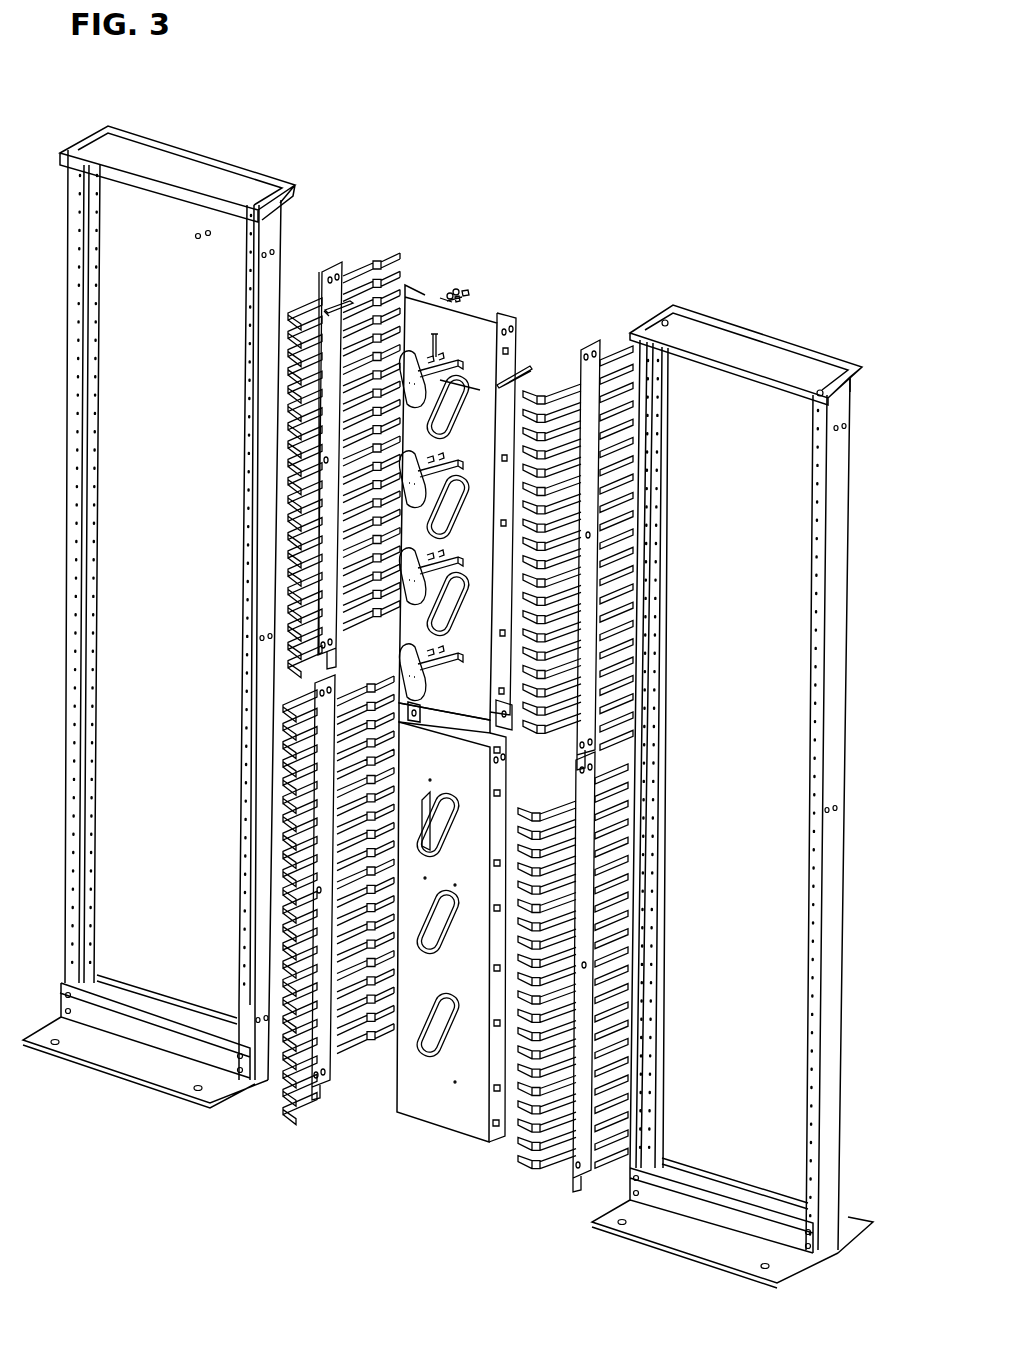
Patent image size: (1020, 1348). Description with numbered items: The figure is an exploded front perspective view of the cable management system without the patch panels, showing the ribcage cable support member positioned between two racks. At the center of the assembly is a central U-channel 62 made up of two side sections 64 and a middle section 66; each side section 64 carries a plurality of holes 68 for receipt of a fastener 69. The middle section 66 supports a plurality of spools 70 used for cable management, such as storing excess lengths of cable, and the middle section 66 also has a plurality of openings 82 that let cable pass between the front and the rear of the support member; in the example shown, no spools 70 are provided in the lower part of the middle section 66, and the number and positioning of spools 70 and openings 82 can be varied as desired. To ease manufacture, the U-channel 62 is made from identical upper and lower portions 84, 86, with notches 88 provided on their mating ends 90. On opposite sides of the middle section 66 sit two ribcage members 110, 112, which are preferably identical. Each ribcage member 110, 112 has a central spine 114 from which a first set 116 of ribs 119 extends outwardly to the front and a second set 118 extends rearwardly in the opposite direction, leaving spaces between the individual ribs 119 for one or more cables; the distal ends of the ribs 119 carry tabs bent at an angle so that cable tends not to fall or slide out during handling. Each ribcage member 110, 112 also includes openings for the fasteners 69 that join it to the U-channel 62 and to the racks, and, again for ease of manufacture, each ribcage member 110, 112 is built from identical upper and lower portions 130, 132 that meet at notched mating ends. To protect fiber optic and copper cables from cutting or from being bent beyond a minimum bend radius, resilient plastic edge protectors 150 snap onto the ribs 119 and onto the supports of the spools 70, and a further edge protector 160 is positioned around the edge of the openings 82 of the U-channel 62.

The central U-channel 62 is at (473, 313).
The side section 64 is at (417, 295).
The middle section 66 is at (475, 357).
The holes 68 is at (514, 330).
The fastener 69 is at (455, 292).
The spool 70 is at (403, 370).
The openings 82 is at (462, 397).
The upper portion 84 is at (453, 708).
The lower portion 86 is at (447, 734).
The notches 88 is at (503, 706).
The mating ends 90 is at (507, 723).
The ribcage member 110 is at (315, 435).
The ribcage member 112 is at (590, 340).
The central spine 114 is at (327, 268).
The first set of ribs 116 is at (305, 300).
The second set of ribs 118 is at (377, 262).
The ribs 119 is at (289, 426).
The upper portion 130 is at (457, 486).
The lower portion 132 is at (290, 915).
The edge protector 150 is at (332, 322).
The edge protector 160 is at (430, 840).